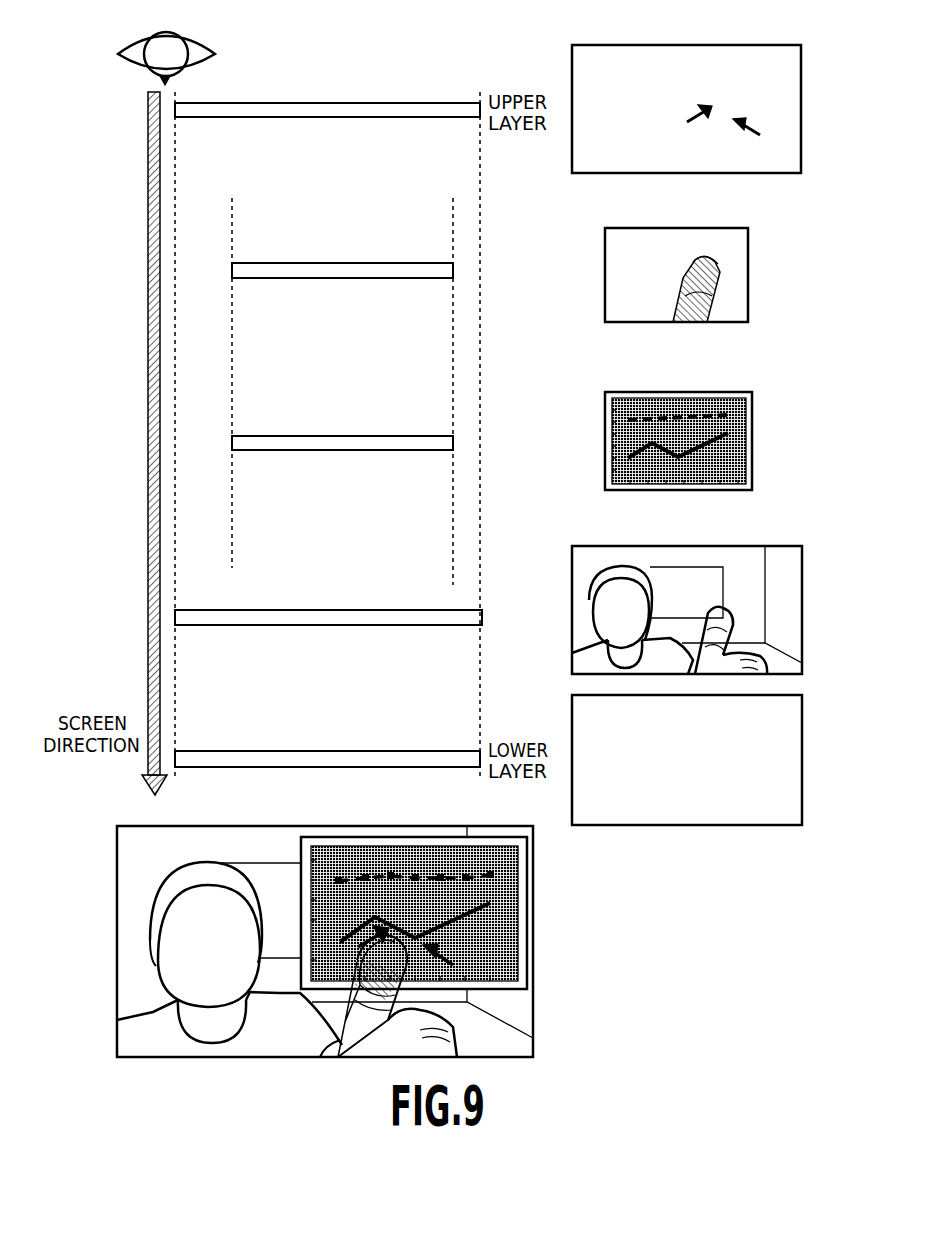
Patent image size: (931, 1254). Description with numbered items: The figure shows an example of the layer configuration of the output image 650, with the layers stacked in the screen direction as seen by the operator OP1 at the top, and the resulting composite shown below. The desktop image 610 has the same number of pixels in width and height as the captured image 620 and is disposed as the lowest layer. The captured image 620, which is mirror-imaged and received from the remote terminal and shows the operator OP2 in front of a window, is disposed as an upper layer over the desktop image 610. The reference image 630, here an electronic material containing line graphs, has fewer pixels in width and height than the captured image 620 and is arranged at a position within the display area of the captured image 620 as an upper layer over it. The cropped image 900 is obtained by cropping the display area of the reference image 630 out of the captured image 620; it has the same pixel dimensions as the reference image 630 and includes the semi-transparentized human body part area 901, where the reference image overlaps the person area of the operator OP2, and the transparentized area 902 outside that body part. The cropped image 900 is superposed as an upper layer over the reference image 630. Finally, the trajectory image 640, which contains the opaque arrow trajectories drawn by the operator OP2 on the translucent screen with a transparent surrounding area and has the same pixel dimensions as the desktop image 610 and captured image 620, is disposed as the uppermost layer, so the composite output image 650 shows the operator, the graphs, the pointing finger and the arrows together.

The operator OP1 is at (198, 40).
The operator OP2 is at (622, 566).
The trajectory image 640 is at (747, 45).
The cropped image 900 is at (697, 228).
The human body part area 901 is at (713, 300).
The area except the human body part area 902 is at (737, 250).
The reference image 630 is at (695, 392).
The captured image 620 is at (687, 596).
The desktop image 610 is at (749, 826).
The output image 650 is at (533, 940).